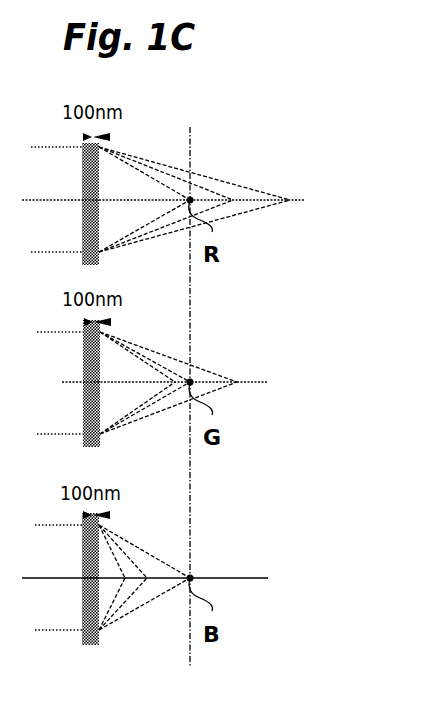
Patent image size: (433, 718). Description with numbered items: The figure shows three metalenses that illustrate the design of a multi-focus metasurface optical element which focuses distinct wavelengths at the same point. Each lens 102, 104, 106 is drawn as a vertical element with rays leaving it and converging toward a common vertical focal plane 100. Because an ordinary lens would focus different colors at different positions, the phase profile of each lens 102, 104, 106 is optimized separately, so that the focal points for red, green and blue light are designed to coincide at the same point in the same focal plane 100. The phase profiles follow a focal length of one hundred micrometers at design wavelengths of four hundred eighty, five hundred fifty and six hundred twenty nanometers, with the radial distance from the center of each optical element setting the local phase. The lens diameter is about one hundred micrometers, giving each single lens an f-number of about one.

The focal plane 100 is at (190, 150).
The lens 102 is at (83, 145).
The lens 104 is at (83, 415).
The lens 106 is at (82, 600).